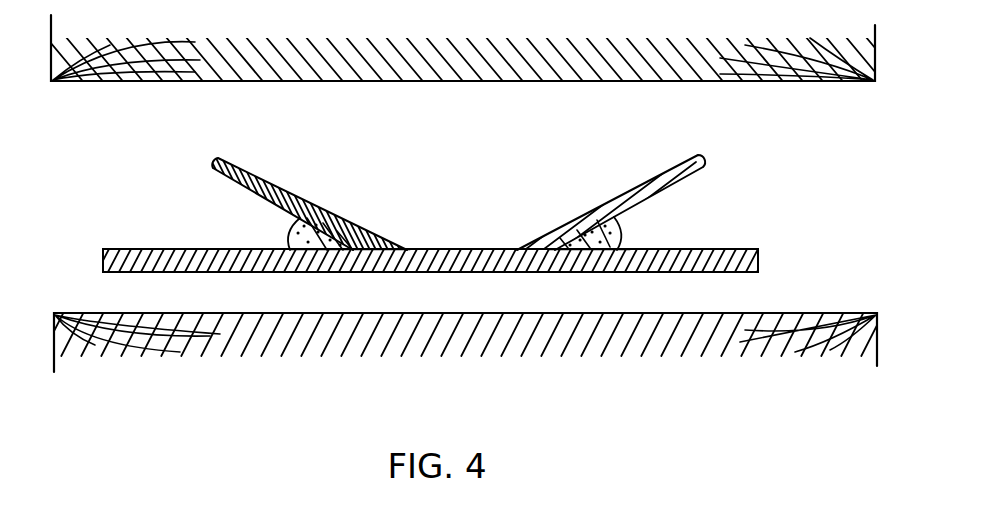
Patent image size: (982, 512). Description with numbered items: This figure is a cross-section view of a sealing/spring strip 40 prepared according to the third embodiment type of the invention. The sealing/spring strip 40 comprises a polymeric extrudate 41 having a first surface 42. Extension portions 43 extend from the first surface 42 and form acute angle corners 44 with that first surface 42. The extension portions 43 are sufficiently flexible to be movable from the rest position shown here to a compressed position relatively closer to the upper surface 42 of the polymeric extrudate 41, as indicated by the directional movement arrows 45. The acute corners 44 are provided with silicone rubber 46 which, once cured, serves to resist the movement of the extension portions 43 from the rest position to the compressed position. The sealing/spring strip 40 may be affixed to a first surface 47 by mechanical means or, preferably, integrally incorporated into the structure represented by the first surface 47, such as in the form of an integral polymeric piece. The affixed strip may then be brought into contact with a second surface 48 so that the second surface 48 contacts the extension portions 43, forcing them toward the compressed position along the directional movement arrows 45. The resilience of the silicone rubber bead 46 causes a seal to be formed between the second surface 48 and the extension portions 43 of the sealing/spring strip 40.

The sealing/spring strip 40 is at (750, 187).
The polymeric extrudate 41 is at (763, 230).
The first surface 42 is at (706, 248).
The extension portions 43 is at (303, 205).
The acute angle corners 44 is at (350, 251).
The directional movement arrows 45 is at (218, 181).
The silicone rubber 46 is at (290, 233).
The first surface 47 is at (790, 312).
The second surface 48 is at (137, 83).